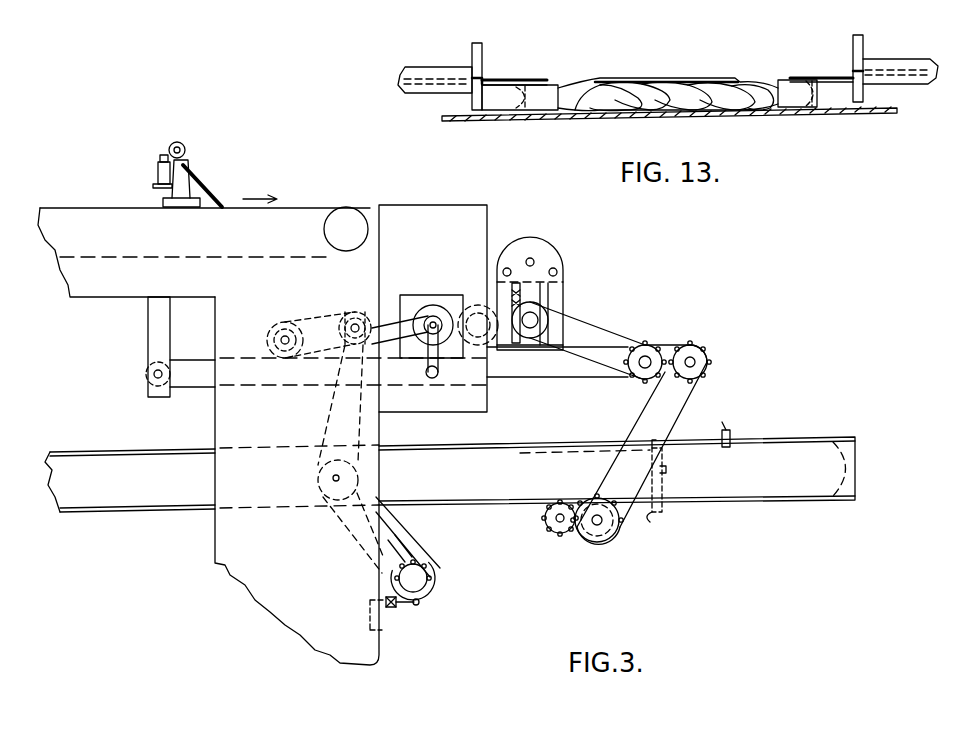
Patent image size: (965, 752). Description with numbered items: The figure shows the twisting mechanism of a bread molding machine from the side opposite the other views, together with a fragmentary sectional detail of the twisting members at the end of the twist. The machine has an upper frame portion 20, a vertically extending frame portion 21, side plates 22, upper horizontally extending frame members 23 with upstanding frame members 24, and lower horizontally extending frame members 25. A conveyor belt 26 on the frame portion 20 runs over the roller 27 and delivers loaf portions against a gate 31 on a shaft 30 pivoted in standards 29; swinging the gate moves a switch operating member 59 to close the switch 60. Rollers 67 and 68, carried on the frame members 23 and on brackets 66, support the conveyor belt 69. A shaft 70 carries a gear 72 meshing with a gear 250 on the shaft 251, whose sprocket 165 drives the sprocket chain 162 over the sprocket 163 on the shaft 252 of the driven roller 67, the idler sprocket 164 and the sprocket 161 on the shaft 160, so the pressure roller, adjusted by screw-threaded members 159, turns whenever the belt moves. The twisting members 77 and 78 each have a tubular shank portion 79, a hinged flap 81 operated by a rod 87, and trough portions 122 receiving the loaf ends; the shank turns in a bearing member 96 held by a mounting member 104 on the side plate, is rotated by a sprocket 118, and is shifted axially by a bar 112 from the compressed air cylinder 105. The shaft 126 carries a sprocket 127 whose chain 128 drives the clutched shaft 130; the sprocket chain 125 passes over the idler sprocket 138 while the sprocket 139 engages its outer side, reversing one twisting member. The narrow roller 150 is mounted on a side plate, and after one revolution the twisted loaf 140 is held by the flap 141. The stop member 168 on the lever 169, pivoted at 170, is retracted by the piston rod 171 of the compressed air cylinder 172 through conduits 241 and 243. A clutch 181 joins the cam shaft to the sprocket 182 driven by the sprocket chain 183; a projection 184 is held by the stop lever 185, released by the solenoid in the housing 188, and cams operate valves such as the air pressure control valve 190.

In FIG. 3, the upper frame portion 20 is at (112, 232).
In FIG. 3, the vertically extending frame portion 21 is at (215, 432).
In FIG. 3, the side plates 22 is at (466, 224).
In FIG. 3, the upper horizontally extending frame members 23 is at (680, 350).
In FIG. 3, the upstanding frame members 24 is at (555, 292).
In FIG. 3, the lower horizontally extending frame members 25 is at (150, 500).
In FIG. 3, the conveyor belt 26 is at (302, 207).
In FIG. 3, the roller 27 is at (358, 213).
In FIG. 3, the standards 29 is at (185, 172).
In FIG. 3, the shaft 30 is at (181, 143).
In FIG. 3, the gate 31 is at (205, 178).
In FIG. 3, the switch operating member 59 is at (166, 158).
In FIG. 3, the switch 60 is at (153, 181).
In FIG. 3, the brackets 66 is at (150, 326).
In FIG. 3, the driven roller 67 is at (632, 343).
In FIG. 3, the roller 68 is at (147, 375).
In FIG. 13, the conveyor belt 69 is at (778, 114).
In FIG. 3, the conveyor belt 69 is at (196, 393).
In FIG. 3, the shaft 70 is at (556, 527).
In FIG. 3, the gear 72 is at (546, 519).
In FIG. 13, the twisting member 77 is at (862, 50).
In FIG. 13, the twisting member 78 is at (480, 50).
In FIG. 13, the tubular shank portion 79 is at (425, 68).
In FIG. 13, the flap 81 is at (520, 82).
In FIG. 13, the rod 87 is at (440, 86).
In FIG. 3, the bearing member 96 is at (441, 318).
In FIG. 3, the mounting member 104 is at (415, 297).
In FIG. 3, the compressed air cylinder 105 is at (428, 380).
In FIG. 3, the bar 112 is at (436, 380).
In FIG. 3, the sprocket 118 is at (433, 305).
In FIG. 13, the trough portions 122 is at (515, 100).
In FIG. 3, the sprocket chain 125 is at (388, 325).
In FIG. 3, the shaft 126 is at (305, 492).
In FIG. 3, the sprocket 127 is at (312, 478).
In FIG. 3, the chain 128 is at (325, 404).
In FIG. 3, the shaft 130 is at (348, 325).
In FIG. 3, the idler sprocket 138 is at (280, 330).
In FIG. 3, the sprocket 139 is at (356, 310).
In FIG. 13, the twisted loaf 140 is at (685, 92).
In FIG. 13, the flap of sheet material 141 is at (655, 86).
In FIG. 3, the roller or wheel 150 is at (478, 306).
In FIG. 3, the screw-threaded members 159 is at (537, 285).
In FIG. 3, the shaft 160 is at (545, 318).
In FIG. 3, the sprocket 161 is at (540, 320).
In FIG. 3, the sprocket chain 162 is at (585, 360).
In FIG. 3, the sprocket 163 is at (638, 376).
In FIG. 3, the idler sprocket 164 is at (700, 361).
In FIG. 3, the sprocket 165 is at (608, 527).
In FIG. 3, the stop member 168 is at (731, 433).
In FIG. 3, the lever 169 is at (690, 440).
In FIG. 3, the pivot 170 is at (525, 455).
In FIG. 3, the piston rod 171 is at (651, 455).
In FIG. 3, the compressed air cylinder 172 is at (663, 480).
In FIG. 3, the clutch 181 is at (437, 580).
In FIG. 3, the sprocket 182 is at (418, 575).
In FIG. 3, the sprocket chain 183 is at (410, 542).
In FIG. 3, the projection 184 is at (418, 605).
In FIG. 3, the stop lever 185 is at (400, 612).
In FIG. 3, the housing 188 is at (370, 632).
In FIG. 3, the air pressure control valve 190 is at (400, 520).
In FIG. 3, the conduit 241 is at (667, 470).
In FIG. 3, the conduit 243 is at (652, 518).
In FIG. 3, the gear 250 is at (590, 535).
In FIG. 3, the shaft 251 is at (598, 522).
In FIG. 3, the shaft 252 is at (648, 358).